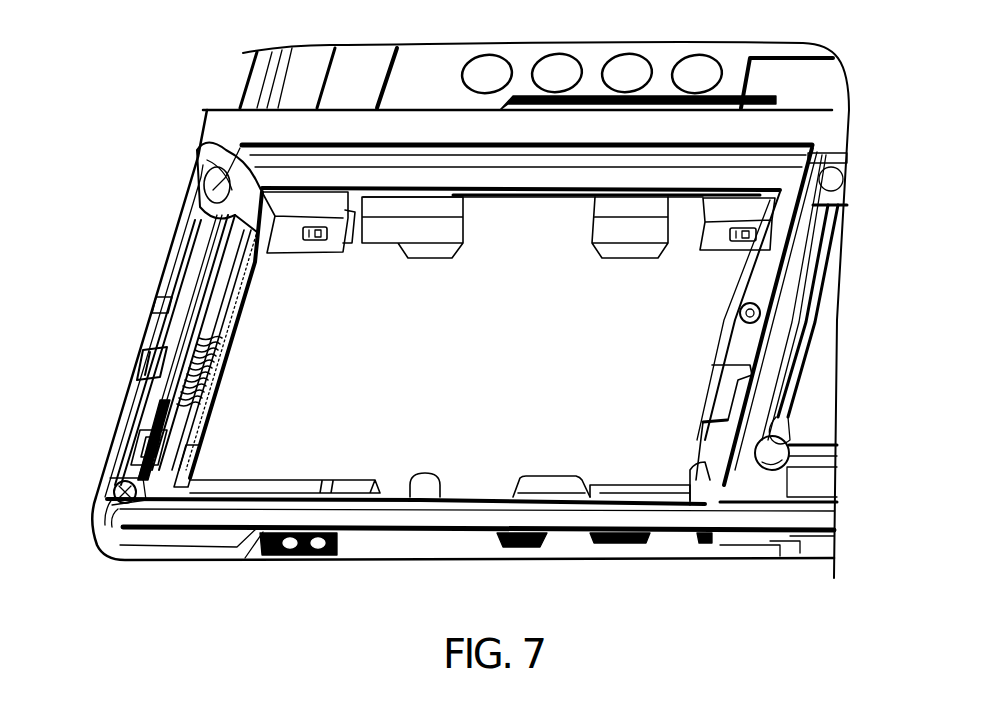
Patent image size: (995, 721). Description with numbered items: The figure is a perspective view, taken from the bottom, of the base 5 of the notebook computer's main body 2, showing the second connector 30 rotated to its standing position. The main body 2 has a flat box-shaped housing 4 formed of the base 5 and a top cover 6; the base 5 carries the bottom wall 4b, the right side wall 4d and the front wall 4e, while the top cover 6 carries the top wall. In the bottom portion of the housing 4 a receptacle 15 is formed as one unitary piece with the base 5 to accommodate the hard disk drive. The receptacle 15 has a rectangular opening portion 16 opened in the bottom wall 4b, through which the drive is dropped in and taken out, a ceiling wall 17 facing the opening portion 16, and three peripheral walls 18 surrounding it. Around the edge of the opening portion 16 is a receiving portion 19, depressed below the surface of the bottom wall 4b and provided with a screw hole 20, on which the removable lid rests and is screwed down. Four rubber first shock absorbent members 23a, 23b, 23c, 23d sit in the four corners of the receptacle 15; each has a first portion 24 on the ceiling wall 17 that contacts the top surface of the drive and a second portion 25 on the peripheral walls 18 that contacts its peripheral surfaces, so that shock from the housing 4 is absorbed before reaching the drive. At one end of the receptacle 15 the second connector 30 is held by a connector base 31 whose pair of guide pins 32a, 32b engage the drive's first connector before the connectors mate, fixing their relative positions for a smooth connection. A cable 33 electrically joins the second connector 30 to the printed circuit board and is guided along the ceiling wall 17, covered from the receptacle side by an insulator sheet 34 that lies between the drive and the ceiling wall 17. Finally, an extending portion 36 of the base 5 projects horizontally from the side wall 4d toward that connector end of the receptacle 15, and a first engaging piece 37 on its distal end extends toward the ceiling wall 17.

The main body 2 is at (103, 560).
The housing 4 is at (236, 614).
The bottom wall 4b is at (420, 123).
The right side wall 4d is at (132, 463).
The front wall 4e is at (362, 543).
The base 5 is at (177, 537).
The top cover 6 is at (223, 556).
The receptacle 15 is at (497, 393).
The opening portion 16 is at (710, 462).
The ceiling wall 17 is at (378, 250).
The peripheral walls 18 is at (643, 200).
The receiving portion 19 is at (537, 173).
The screw hole 20 is at (738, 312).
The first shock absorbent member 23a is at (328, 250).
The first shock absorbent member 23b is at (720, 247).
The first shock absorbent member 23c is at (630, 486).
The first shock absorbent member 23d is at (242, 484).
The first portion 24 is at (288, 235).
The second portion 25 is at (303, 202).
The second connector 30 is at (160, 298).
The connector base 31 is at (197, 305).
The guide pin 32a is at (143, 352).
The guide pin 32b is at (199, 203).
The cable 33 is at (228, 355).
The insulator sheet 34 is at (562, 464).
The extending portion 36 is at (163, 432).
The first engaging piece 37 is at (190, 457).